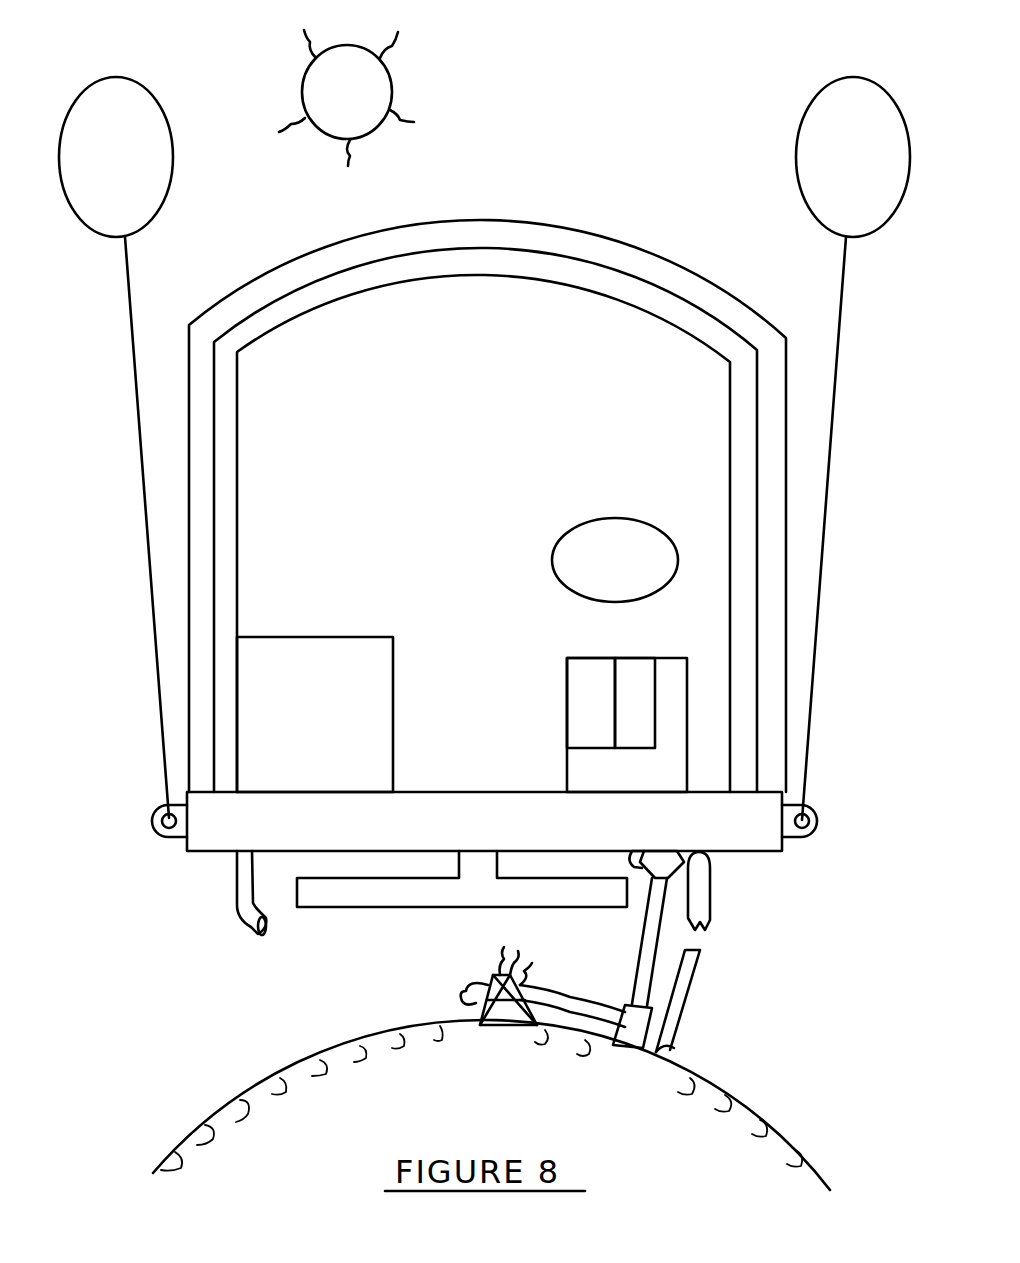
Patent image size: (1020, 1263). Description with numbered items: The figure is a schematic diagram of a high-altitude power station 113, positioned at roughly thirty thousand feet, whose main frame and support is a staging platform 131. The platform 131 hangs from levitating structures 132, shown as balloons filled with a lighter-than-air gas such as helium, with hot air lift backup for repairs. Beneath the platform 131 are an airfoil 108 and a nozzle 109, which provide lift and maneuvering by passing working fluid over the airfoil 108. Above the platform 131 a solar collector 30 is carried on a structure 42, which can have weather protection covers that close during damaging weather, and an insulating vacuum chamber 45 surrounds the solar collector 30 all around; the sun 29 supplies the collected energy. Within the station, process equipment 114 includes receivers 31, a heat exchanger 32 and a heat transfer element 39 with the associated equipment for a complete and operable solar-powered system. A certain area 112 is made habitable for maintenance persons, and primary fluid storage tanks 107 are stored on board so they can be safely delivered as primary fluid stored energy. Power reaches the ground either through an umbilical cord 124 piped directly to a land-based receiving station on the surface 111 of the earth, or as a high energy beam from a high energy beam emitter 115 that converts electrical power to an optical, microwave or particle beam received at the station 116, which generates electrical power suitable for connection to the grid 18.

The sun 29 is at (393, 82).
The levitating structures 132 is at (132, 178).
The insulating vacuum chamber 45 is at (712, 240).
The solar collector 30 is at (692, 342).
The structure 42 is at (237, 497).
The power station 113 is at (460, 540).
The tanks 107 is at (636, 570).
The receivers 31 is at (634, 790).
The staging platform 131 is at (770, 853).
The area 112 is at (393, 696).
The process equipment 114 is at (602, 657).
The heat transfer element 39 is at (604, 723).
The heat exchanger 32 is at (650, 711).
The nozzle 109 is at (237, 913).
The airfoil 108 is at (520, 912).
The high energy beam emitter 115 is at (644, 854).
The umbilical cord 124 is at (710, 916).
The station 116 is at (591, 1051).
The grid 18 is at (486, 968).
The surface 111 is at (225, 1110).